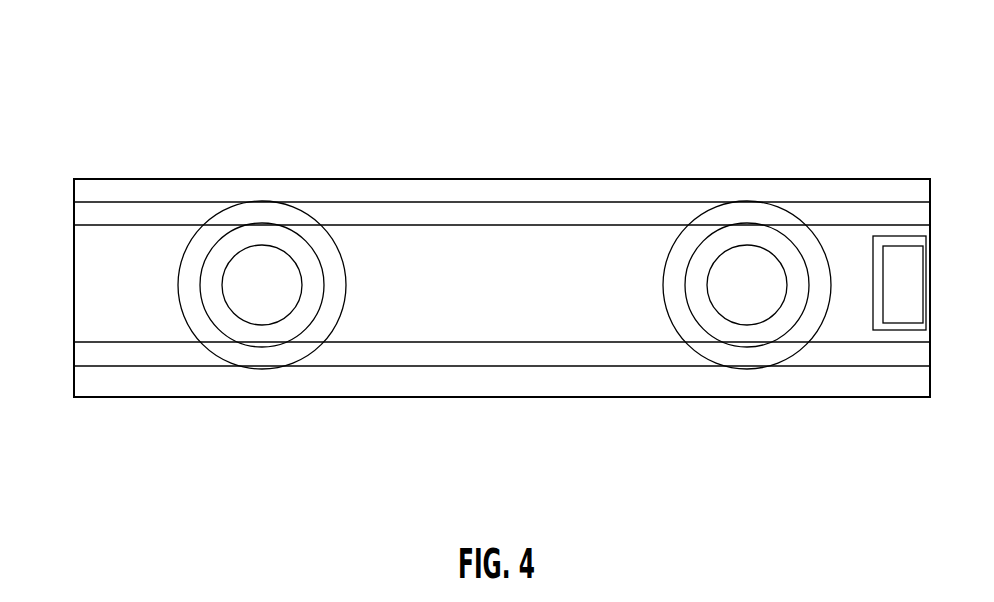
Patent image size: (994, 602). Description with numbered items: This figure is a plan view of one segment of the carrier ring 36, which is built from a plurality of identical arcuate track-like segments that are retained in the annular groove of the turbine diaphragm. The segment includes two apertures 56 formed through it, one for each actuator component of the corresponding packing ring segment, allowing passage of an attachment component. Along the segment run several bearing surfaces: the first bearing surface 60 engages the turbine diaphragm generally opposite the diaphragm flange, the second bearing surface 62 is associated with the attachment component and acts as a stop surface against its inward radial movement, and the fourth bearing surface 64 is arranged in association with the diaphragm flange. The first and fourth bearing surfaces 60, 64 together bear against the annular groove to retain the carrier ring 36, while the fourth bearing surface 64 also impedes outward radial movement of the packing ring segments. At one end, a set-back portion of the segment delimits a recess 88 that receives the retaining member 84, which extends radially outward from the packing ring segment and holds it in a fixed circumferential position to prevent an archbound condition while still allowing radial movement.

The carrier ring 36 is at (86, 108).
The aperture 56 is at (257, 262).
The first bearing surface 60 is at (173, 188).
The second bearing surface 62 is at (306, 226).
The fourth bearing surface 64 is at (308, 267).
The retaining member 84 is at (902, 303).
The recess 88 is at (914, 240).